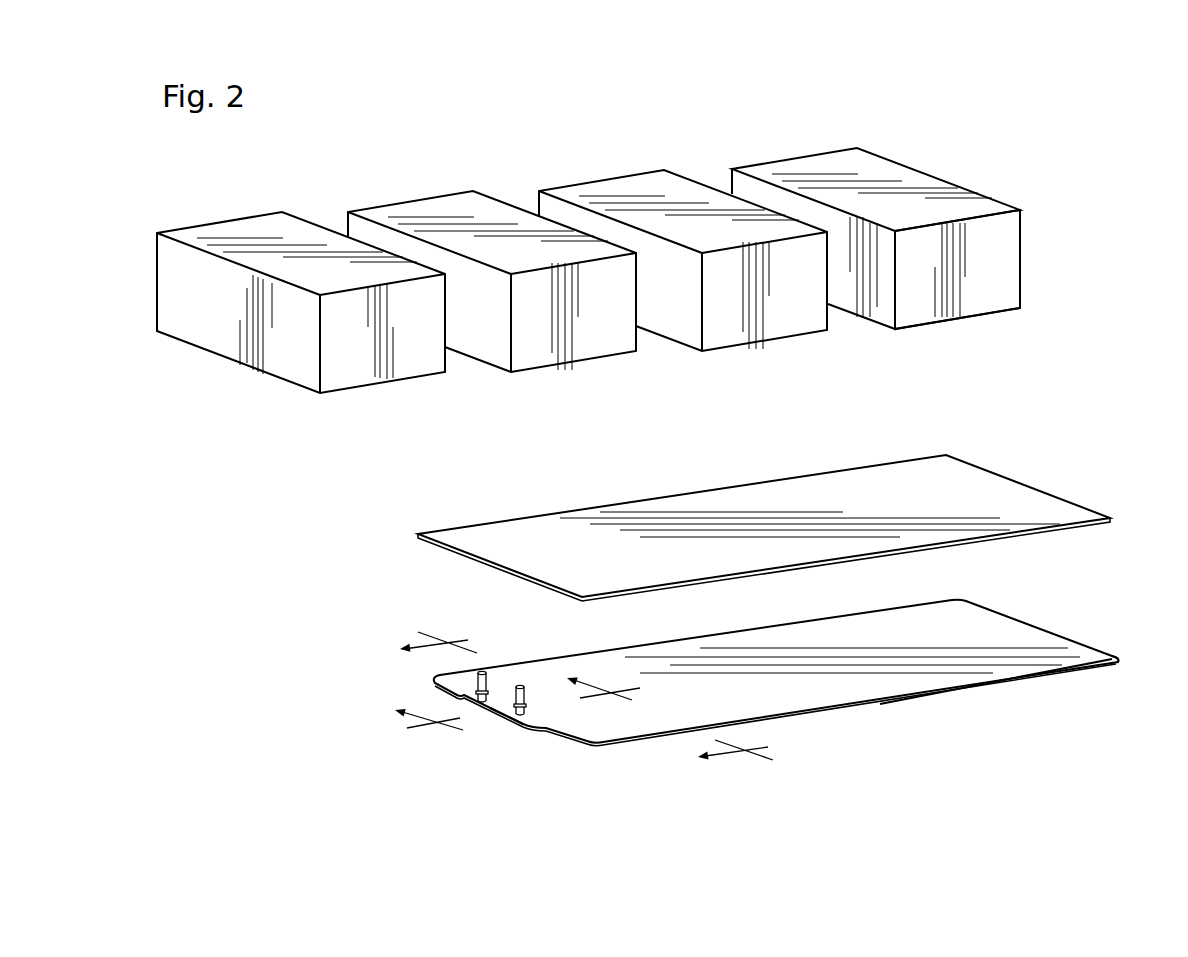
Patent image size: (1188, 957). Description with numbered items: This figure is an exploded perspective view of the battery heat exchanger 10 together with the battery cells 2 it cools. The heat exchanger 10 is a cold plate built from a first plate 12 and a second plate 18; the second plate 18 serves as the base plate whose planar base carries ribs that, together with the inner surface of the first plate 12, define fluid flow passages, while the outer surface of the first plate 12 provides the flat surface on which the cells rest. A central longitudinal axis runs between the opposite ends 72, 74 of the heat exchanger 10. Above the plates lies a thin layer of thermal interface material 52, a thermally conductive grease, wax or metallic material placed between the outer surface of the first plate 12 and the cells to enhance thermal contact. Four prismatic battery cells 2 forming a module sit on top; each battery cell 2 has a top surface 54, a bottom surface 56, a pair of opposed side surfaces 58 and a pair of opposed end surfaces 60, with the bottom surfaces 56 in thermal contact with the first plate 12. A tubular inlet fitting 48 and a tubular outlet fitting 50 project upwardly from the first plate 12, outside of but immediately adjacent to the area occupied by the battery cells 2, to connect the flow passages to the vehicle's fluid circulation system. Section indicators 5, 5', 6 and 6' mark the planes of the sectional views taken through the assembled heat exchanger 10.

The battery cell 2 is at (655, 257).
The heat exchanger 10 is at (350, 503).
The first plate 12 is at (1037, 640).
The second plate 18 is at (965, 689).
The tubular inlet fitting 48 is at (525, 694).
The tubular outlet fitting 50 is at (485, 682).
The thermal interface material 52 is at (1009, 495).
The top surface 54 is at (945, 195).
The bottom surface 56 is at (983, 317).
The side surface 58 is at (1028, 246).
The end surface 60 is at (1005, 292).
The end of heat exchanger 72 is at (508, 723).
The end of heat exchanger 74 is at (1108, 638).
The section line 5 is at (429, 734).
The section line 5' is at (603, 702).
The section line 6 is at (438, 631).
The section line 6' is at (735, 738).